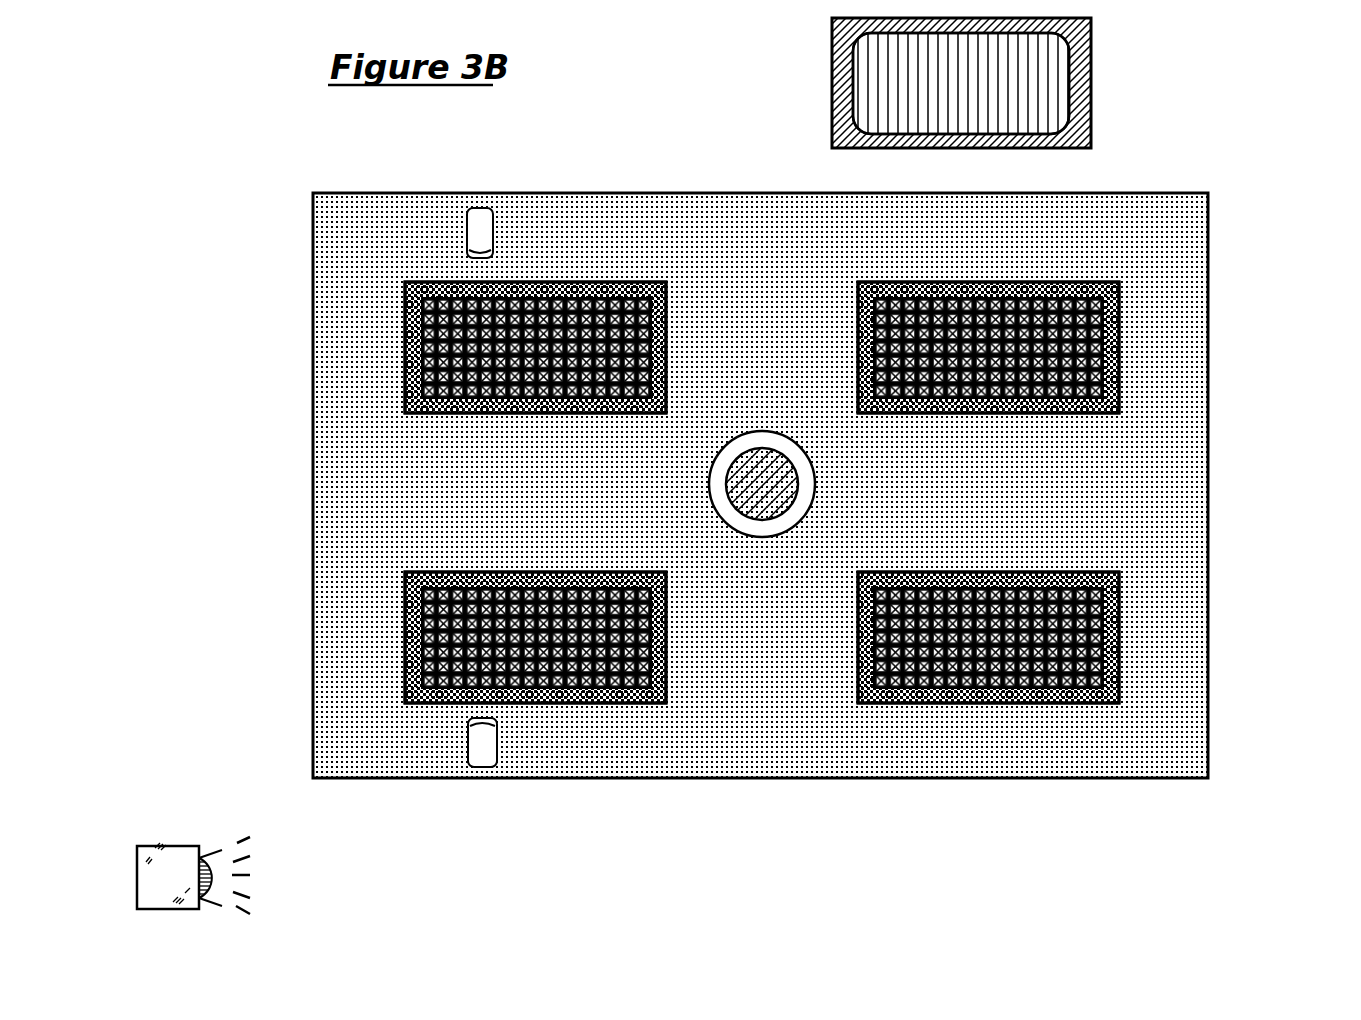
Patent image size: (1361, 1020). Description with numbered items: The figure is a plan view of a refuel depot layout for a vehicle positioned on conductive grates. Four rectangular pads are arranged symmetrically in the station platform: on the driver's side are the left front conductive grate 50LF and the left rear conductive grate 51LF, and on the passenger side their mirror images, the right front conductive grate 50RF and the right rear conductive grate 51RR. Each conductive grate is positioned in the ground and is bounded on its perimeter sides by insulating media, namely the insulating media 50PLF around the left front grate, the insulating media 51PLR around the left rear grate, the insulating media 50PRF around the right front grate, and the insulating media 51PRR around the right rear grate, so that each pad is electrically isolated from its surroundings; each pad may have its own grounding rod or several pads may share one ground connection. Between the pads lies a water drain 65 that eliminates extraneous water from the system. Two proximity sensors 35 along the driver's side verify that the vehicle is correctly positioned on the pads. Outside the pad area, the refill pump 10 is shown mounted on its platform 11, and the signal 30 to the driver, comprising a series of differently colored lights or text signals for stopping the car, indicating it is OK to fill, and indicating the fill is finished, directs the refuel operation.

The refill pump 10 is at (1024, 62).
The platform 11 is at (1091, 118).
The signal 30 is at (137, 874).
The proximity sensor 35 is at (485, 232).
The conductive grate 50RF is at (580, 300).
The insulating media 50PRF is at (665, 282).
The conductive grate 50LF is at (578, 690).
The insulating media 50PLF is at (664, 703).
The conductive grate 51RR is at (1110, 341).
The insulating media 51PRR is at (1119, 410).
The conductive grate 51LF is at (1034, 703).
The insulating media 51PLR is at (1118, 703).
The water drain 65 is at (815, 492).